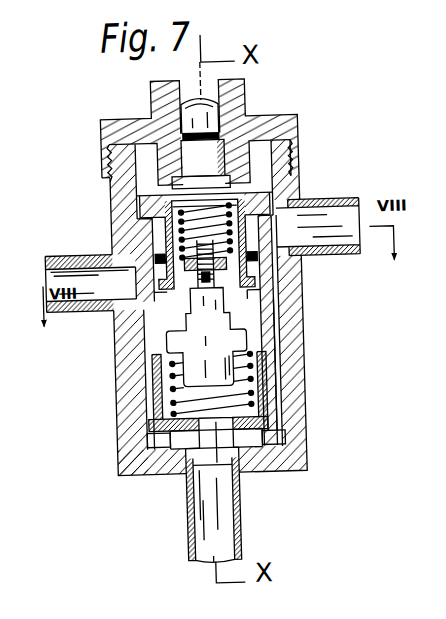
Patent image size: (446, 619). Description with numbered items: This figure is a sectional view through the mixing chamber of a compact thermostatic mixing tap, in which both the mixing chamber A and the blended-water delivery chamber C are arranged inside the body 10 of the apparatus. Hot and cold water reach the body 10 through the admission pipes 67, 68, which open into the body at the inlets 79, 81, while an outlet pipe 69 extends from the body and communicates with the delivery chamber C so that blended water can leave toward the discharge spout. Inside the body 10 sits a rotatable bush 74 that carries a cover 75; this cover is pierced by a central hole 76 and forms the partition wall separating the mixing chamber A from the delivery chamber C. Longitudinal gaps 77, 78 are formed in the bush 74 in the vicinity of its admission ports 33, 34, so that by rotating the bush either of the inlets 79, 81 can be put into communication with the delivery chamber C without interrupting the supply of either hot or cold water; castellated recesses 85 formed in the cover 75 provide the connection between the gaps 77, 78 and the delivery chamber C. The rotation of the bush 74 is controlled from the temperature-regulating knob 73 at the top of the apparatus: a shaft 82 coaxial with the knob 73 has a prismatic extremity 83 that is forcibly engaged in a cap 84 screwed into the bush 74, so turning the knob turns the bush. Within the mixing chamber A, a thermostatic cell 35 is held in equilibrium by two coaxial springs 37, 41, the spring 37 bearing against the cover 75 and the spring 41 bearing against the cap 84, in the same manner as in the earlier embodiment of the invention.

The body 10 is at (305, 355).
The admission port 33 is at (141, 266).
The admission port 34 is at (299, 265).
The thermostatic cell 35 is at (158, 391).
The spring 37 is at (278, 387).
The spring 41 is at (143, 218).
The admission pipe 67 is at (80, 310).
The admission pipe 68 is at (338, 205).
The outlet pipe 69 is at (241, 546).
The knob 73 is at (148, 91).
The bush 74 is at (241, 301).
The cover 75 is at (147, 426).
The central hole 76 is at (210, 430).
The longitudinal gap 77 is at (158, 364).
The longitudinal gap 78 is at (278, 399).
The inlet 79 is at (133, 283).
The inlet 81 is at (352, 236).
The shaft 82 is at (233, 136).
The prismatic extremity 83 is at (201, 160).
The cap 84 is at (304, 187).
The castellated recesses 85 is at (163, 449).
The mixing chamber A is at (271, 298).
The blended-water delivery chamber C is at (244, 444).